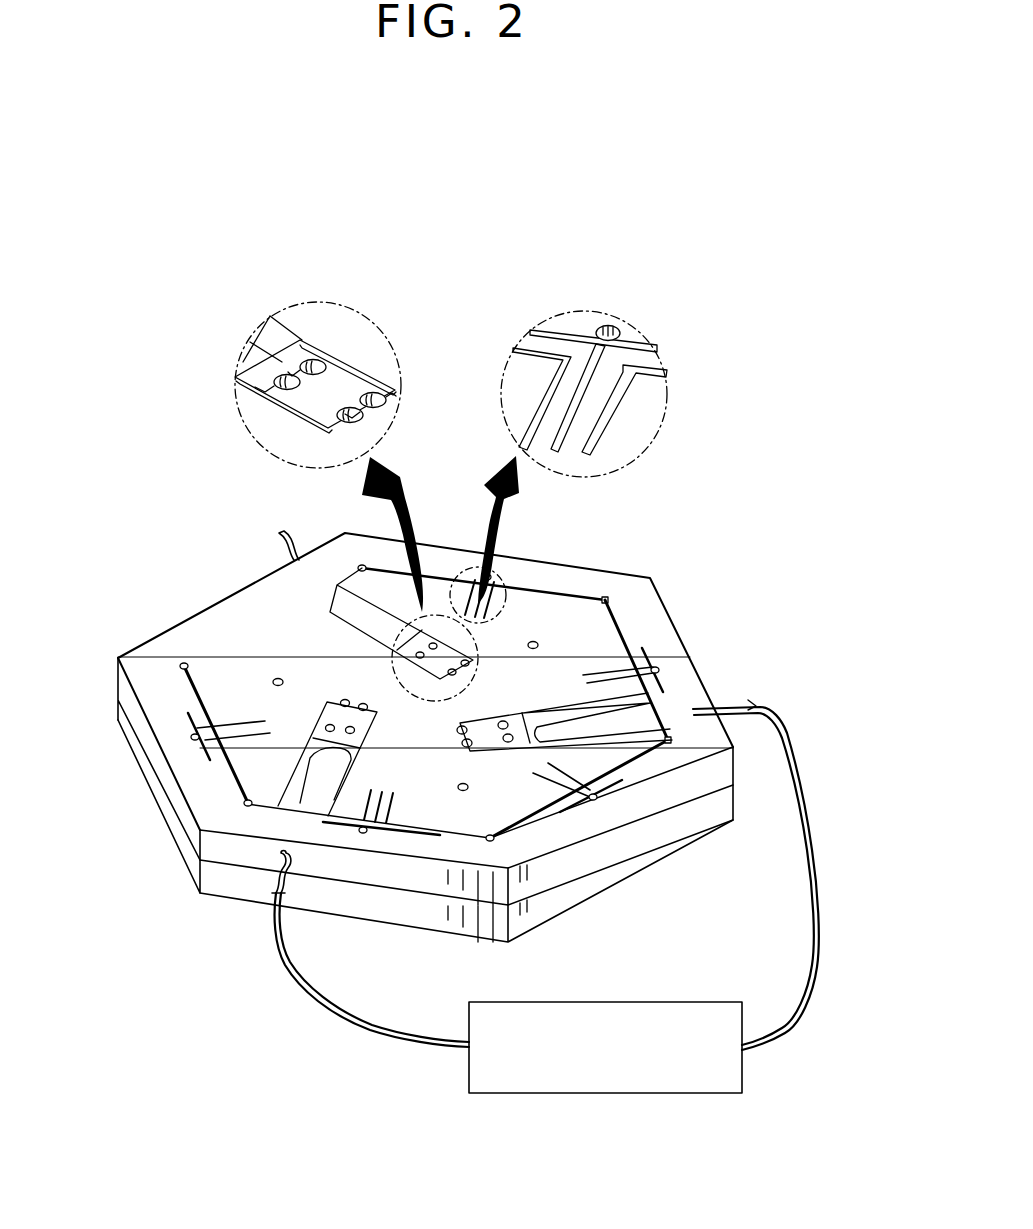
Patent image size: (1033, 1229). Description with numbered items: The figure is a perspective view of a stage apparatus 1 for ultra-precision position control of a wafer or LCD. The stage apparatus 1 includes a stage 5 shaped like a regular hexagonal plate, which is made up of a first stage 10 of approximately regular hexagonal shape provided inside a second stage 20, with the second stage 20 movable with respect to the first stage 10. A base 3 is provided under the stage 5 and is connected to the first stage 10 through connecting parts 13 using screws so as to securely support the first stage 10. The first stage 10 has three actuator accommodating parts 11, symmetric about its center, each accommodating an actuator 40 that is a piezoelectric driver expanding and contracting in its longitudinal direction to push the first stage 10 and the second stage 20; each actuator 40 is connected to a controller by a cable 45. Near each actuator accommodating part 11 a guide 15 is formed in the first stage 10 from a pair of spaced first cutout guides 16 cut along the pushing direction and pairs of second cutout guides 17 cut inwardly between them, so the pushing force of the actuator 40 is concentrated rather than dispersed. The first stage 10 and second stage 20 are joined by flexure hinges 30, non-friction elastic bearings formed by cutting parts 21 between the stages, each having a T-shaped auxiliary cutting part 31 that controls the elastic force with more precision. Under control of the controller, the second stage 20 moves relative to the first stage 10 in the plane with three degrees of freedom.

The stage apparatus 1 is at (123, 573).
The base 3 is at (630, 858).
The stage 5 is at (751, 560).
The first stage 10 is at (598, 625).
The actuator accommodating part 11 is at (356, 590).
The connecting part 13 is at (470, 792).
The guide 15 is at (357, 240).
The first cutout guide 16 is at (340, 357).
The second cutout guide 17 is at (283, 375).
The second stage 20 is at (667, 636).
The cutting part 21 is at (573, 596).
The flexure hinge 30 is at (590, 417).
The auxiliary cutting part 31 is at (598, 343).
The actuator 40 is at (290, 584).
The cable 45 is at (278, 534).